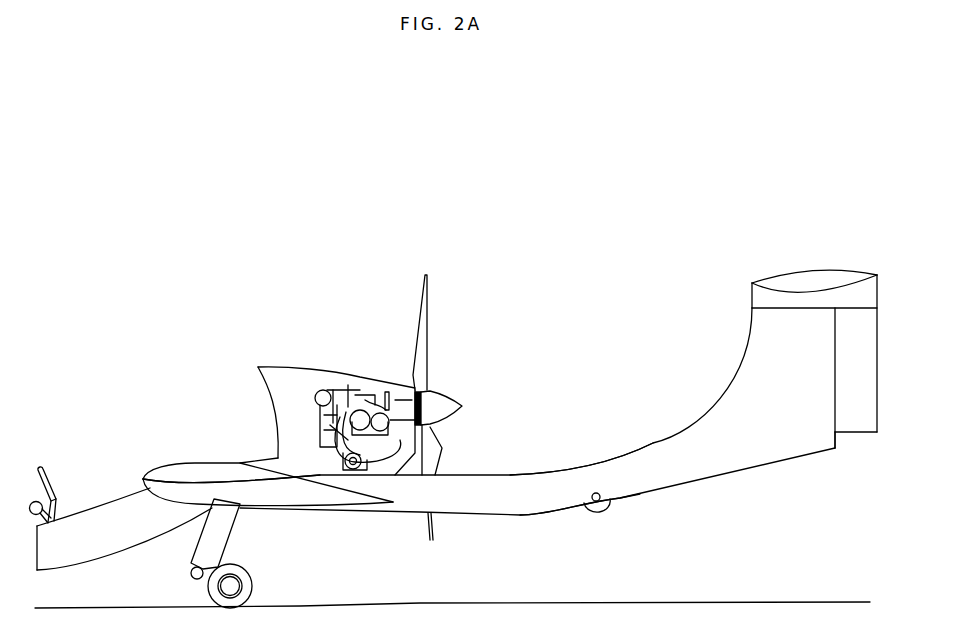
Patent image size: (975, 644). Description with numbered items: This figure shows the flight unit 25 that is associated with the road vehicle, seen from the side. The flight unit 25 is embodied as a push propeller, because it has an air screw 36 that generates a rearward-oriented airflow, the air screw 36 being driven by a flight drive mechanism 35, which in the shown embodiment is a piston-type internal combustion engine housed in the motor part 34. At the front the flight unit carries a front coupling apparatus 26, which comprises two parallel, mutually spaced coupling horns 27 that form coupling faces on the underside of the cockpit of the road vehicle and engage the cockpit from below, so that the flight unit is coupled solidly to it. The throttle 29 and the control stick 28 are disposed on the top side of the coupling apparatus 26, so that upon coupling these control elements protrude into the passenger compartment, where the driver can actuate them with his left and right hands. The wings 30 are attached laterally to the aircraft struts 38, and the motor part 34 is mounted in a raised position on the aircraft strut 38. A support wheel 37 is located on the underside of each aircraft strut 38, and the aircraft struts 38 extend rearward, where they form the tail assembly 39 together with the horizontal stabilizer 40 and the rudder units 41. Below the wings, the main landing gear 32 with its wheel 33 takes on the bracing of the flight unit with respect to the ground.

The flight unit 25 is at (472, 309).
The front coupling apparatus 26 is at (112, 498).
The coupling horn 27 is at (103, 558).
The control stick 28 is at (47, 479).
The throttle 29 is at (33, 512).
The wing 30 is at (182, 468).
The main landing gear 32 is at (228, 522).
The wheel 33 is at (251, 587).
The motor part 34 is at (288, 373).
The flight drive mechanism 35 is at (351, 388).
The air screw 36 is at (423, 355).
The support wheel 37 is at (609, 508).
The aircraft strut 38 is at (518, 480).
The tail assembly 39 is at (710, 313).
The horizontal stabilizer 40 is at (777, 283).
The rudder unit 41 is at (829, 445).